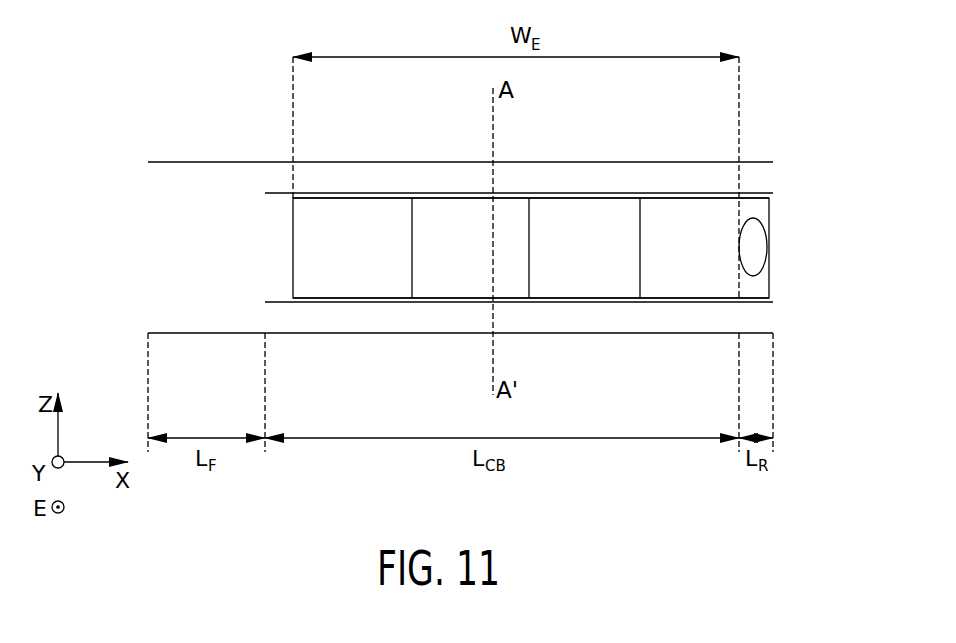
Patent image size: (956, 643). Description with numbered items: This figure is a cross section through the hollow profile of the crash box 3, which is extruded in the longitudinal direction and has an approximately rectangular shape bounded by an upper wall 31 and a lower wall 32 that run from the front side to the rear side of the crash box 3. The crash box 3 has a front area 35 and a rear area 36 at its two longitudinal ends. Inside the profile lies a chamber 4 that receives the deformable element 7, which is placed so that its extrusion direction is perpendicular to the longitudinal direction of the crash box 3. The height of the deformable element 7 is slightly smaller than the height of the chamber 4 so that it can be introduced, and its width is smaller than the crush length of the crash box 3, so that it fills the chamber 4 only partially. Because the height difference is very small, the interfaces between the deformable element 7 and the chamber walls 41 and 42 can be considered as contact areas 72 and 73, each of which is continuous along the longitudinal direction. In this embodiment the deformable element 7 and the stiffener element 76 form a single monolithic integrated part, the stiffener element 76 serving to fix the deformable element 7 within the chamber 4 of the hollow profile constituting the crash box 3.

The crash box 3 is at (140, 210).
The chamber 4 is at (204, 207).
The deformable element 7 is at (612, 223).
The upper wall 31 is at (381, 160).
The lower wall 32 is at (424, 335).
The front area 35 is at (224, 153).
The rear area 36 is at (757, 153).
The wall of the chamber 41 is at (433, 193).
The wall of the chamber 42 is at (469, 304).
The contact area 72 is at (578, 197).
The contact area 73 is at (569, 304).
The stiffener element 76 is at (770, 247).